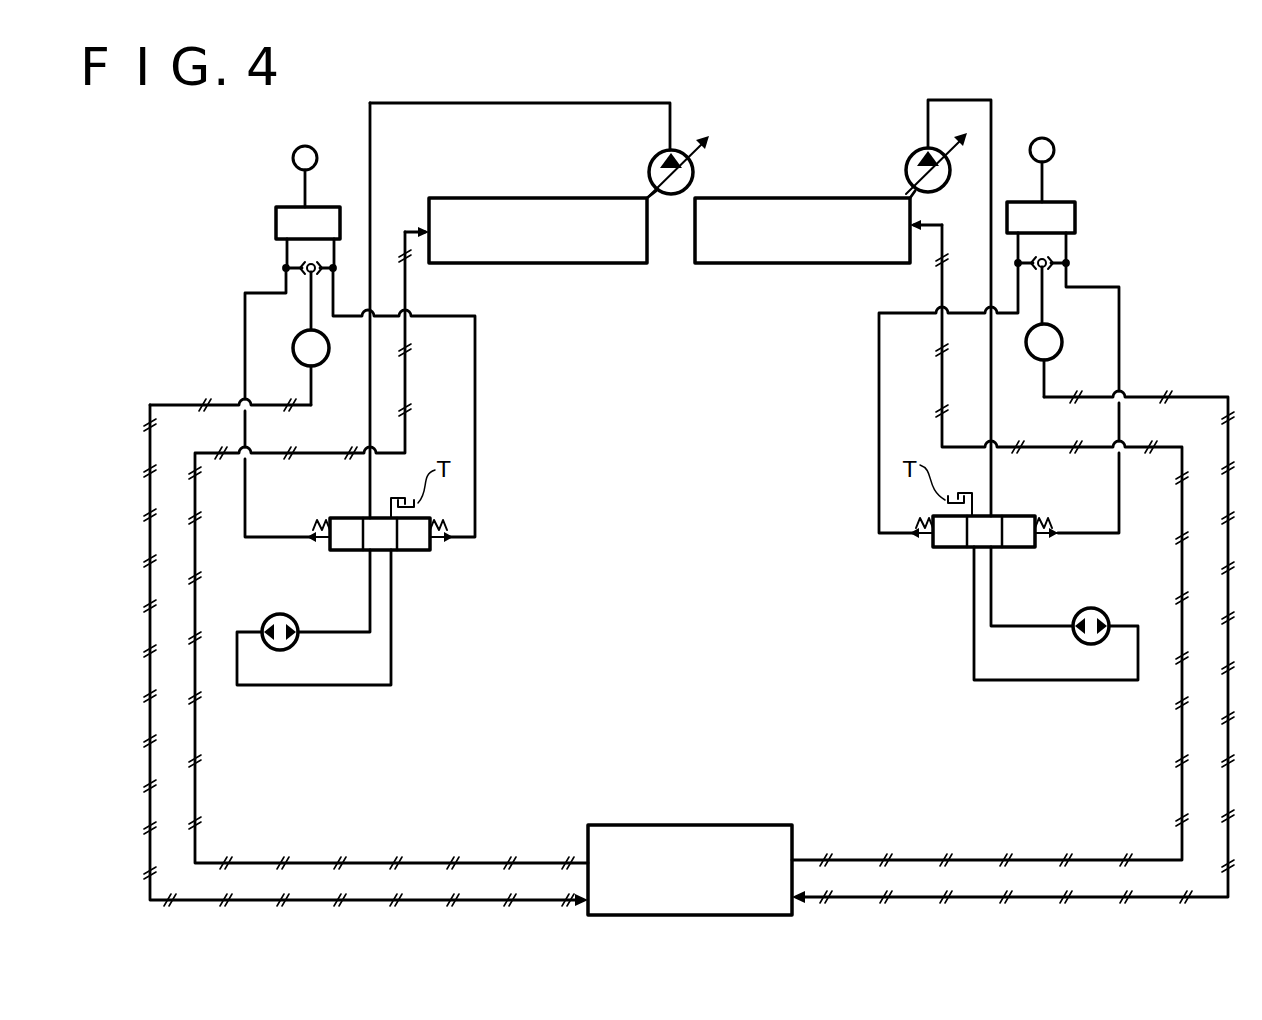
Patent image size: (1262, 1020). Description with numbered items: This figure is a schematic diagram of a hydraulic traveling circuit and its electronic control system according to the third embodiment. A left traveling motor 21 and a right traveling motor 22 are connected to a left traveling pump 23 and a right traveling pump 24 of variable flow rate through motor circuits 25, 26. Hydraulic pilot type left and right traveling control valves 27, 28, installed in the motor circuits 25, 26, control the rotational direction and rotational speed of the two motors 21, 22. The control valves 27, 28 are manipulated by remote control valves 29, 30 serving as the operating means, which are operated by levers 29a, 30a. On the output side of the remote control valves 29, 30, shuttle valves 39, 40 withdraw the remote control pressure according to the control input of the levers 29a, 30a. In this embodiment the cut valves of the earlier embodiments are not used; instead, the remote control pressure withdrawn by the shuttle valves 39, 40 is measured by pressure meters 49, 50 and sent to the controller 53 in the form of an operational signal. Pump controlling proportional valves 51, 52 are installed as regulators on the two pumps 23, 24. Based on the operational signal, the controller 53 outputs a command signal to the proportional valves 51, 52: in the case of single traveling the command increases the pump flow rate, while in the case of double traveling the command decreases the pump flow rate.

The left traveling motor 21 is at (272, 615).
The right traveling motor 22 is at (1103, 610).
The left traveling pump 23 is at (652, 165).
The right traveling pump 24 is at (908, 164).
The motor circuit 25 is at (372, 380).
The motor circuit 26 is at (989, 378).
The left traveling control valve 27 is at (430, 550).
The right traveling control valve 28 is at (945, 547).
The remote control valve 29 is at (276, 223).
The lever 29a is at (305, 185).
The remote control valve 30 is at (1075, 218).
The lever 30a is at (1044, 180).
The shuttle valve 39 is at (300, 272).
The shuttle valve 40 is at (1066, 267).
The pressure meter 49 is at (325, 362).
The pressure meter 50 is at (1030, 358).
The pump controlling proportional valve 51 is at (590, 263).
The pump controlling proportional valve 52 is at (752, 263).
The controller 53 is at (740, 825).